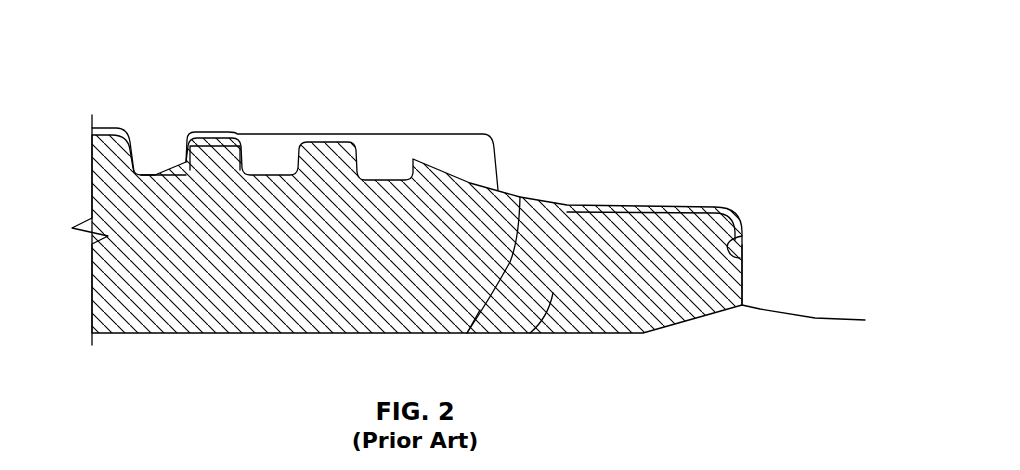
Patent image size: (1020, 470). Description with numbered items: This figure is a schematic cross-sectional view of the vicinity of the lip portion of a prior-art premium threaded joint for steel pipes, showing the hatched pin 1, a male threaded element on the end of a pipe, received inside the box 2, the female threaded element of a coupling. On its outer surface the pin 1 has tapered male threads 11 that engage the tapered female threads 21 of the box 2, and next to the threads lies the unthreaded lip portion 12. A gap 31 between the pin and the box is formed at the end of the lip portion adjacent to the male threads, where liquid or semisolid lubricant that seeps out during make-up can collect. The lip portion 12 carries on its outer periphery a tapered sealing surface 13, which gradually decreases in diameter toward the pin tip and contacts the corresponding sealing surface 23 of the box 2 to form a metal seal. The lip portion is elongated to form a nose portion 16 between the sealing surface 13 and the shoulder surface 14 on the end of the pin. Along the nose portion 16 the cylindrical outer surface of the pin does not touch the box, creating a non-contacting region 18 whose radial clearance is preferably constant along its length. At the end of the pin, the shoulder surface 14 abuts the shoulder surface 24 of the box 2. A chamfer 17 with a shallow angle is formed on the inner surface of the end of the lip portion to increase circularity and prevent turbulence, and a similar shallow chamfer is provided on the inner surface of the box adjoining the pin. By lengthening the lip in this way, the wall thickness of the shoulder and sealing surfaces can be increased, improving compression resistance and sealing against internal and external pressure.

The pin 1 is at (230, 322).
The box 2 is at (618, 129).
The tapered male threads 11 is at (208, 149).
The tapered female threads 21 is at (157, 148).
The gap 31 is at (395, 167).
The sealing surface 23 is at (545, 198).
The non-contacting region 18 is at (699, 211).
The nose portion 16 is at (625, 265).
The shoulder surface 14 is at (743, 237).
The shoulder surface 24 is at (743, 282).
The chamfer 17 is at (660, 331).
The lip portion 12 is at (530, 333).
The sealing surface 13 is at (467, 333).